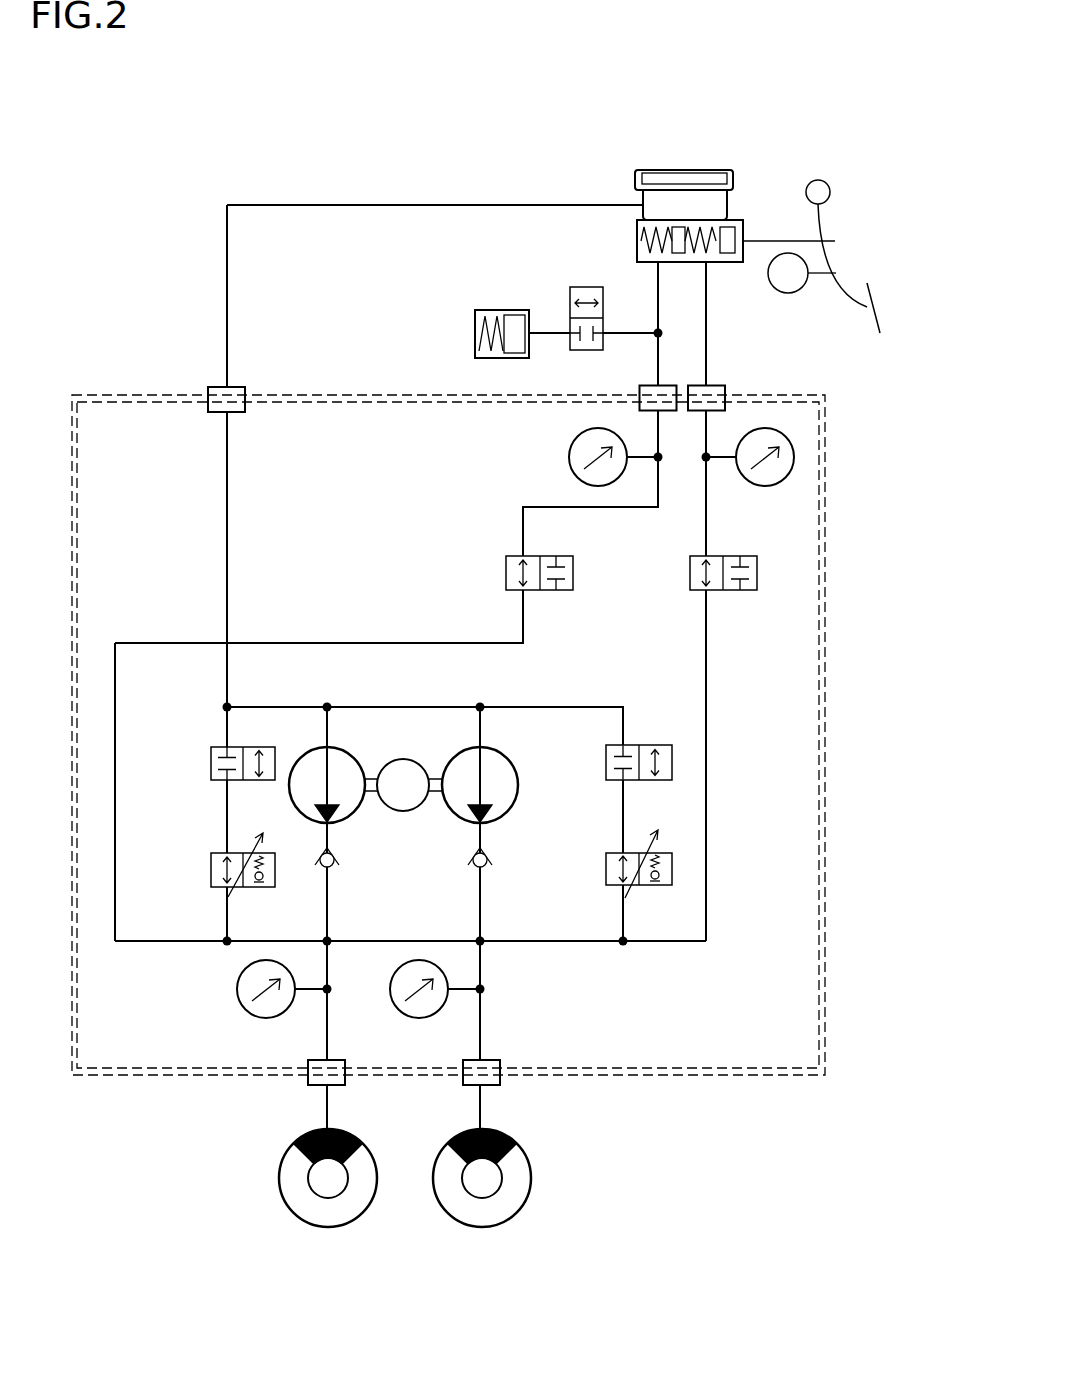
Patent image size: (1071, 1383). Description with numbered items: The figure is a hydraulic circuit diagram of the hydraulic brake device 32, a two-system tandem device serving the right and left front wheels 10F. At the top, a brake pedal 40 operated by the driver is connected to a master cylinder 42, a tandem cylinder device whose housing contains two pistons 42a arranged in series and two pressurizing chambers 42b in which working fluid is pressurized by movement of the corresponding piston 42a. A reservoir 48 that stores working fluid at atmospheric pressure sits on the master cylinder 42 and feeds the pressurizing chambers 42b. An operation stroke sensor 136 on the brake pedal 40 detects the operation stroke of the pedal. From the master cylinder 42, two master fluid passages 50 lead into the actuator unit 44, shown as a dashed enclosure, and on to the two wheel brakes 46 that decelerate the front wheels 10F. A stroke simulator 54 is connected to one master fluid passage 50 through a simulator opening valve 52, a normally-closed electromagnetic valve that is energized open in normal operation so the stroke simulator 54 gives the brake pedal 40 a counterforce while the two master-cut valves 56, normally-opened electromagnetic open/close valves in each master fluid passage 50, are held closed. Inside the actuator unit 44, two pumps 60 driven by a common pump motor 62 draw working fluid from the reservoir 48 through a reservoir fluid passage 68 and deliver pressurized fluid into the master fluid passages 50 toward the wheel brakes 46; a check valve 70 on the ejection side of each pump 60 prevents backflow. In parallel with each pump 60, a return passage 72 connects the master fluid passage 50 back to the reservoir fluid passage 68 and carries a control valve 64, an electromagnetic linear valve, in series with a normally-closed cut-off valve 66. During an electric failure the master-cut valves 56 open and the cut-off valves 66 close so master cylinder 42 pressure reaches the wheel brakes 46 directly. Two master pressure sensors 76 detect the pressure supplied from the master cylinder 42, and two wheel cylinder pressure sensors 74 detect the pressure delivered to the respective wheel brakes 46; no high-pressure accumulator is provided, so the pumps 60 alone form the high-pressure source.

The hydraulic brake device 32 is at (172, 193).
The brake pedal 40 is at (882, 322).
The master cylinder 42 is at (740, 218).
The piston 42a is at (730, 257).
The pressurizing chamber 42b is at (648, 258).
The actuator unit 44 is at (823, 608).
The wheel brake 46 is at (347, 1135).
The reservoir 48 is at (648, 178).
The master fluid passage 50 is at (340, 643).
The simulator opening valve 52 is at (578, 287).
The stroke simulator 54 is at (481, 310).
The master-cut valve 56 is at (567, 556).
The pump 60 is at (350, 750).
The pump motor 62 is at (415, 811).
The control valve 64 is at (273, 887).
The cut-off valve 66 is at (265, 747).
The reservoir fluid passage 68 is at (228, 498).
The check valve 70 is at (335, 865).
The return passage 72 is at (227, 805).
The wheel cylinder pressure sensor 74 is at (242, 1010).
The master pressure sensor 76 is at (568, 457).
The operation stroke sensor 136 is at (788, 295).
The front wheel 10F is at (414, 1188).